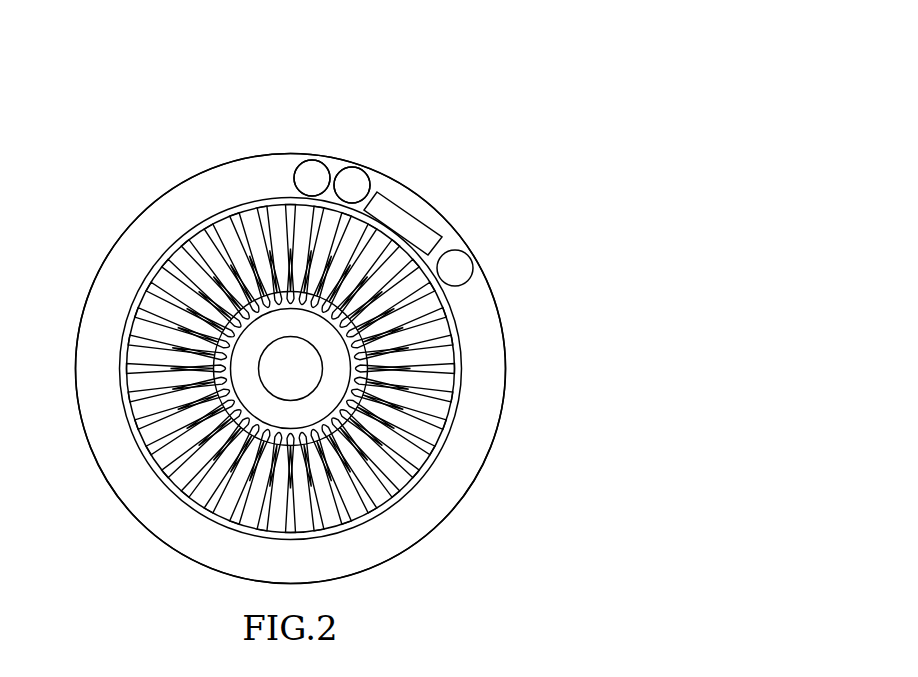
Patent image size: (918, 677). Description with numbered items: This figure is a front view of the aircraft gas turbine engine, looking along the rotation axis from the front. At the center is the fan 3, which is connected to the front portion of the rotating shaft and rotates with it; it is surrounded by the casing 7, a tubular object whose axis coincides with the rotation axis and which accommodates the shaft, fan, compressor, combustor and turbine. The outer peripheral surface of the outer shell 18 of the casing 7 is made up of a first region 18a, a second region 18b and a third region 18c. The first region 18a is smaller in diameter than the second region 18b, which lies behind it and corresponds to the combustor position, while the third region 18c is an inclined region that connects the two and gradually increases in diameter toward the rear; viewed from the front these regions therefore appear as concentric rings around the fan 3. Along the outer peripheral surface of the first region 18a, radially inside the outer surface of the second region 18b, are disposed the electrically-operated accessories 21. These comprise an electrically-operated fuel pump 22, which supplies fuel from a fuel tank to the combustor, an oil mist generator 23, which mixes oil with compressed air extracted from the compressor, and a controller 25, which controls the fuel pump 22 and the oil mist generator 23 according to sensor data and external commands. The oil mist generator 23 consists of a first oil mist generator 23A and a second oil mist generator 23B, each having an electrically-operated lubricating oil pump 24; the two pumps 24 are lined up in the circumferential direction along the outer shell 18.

The fan 3 is at (420, 428).
The casing 7 is at (513, 313).
The outer shell 18 is at (282, 332).
The first region 18a is at (181, 233).
The second region 18b is at (172, 186).
The third region 18c is at (291, 330).
The electrically-operated accessories 21 is at (379, 144).
The electrically-operated fuel pump 22 is at (460, 251).
The oil mist generator 23 is at (355, 126).
The first oil mist generator 23A is at (315, 163).
The second oil mist generator 23B is at (375, 149).
The electrically-operated lubricating oil pump 24 is at (303, 157).
The controller 25 is at (440, 222).